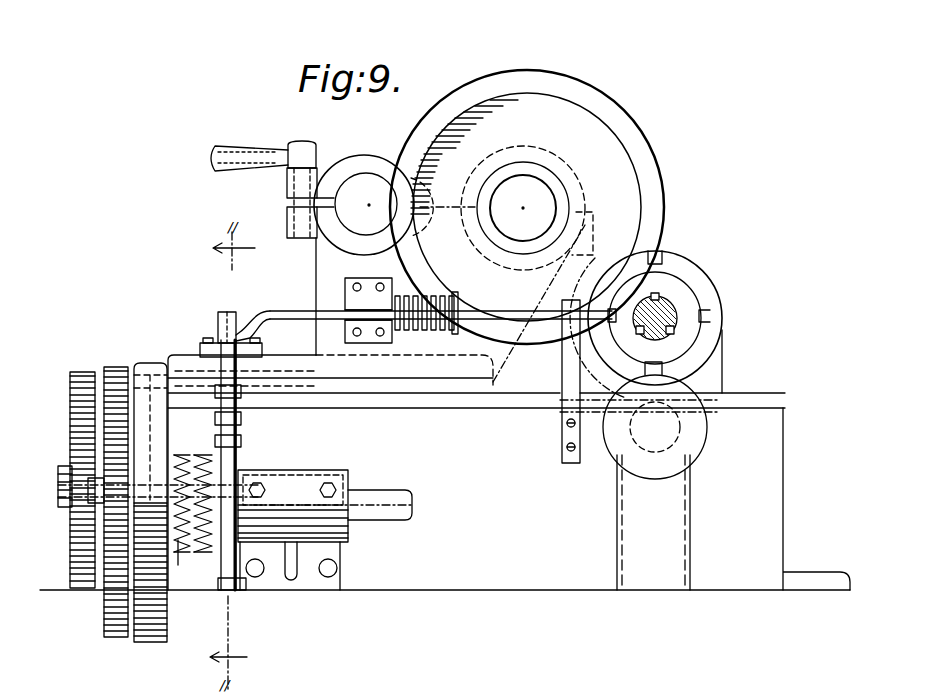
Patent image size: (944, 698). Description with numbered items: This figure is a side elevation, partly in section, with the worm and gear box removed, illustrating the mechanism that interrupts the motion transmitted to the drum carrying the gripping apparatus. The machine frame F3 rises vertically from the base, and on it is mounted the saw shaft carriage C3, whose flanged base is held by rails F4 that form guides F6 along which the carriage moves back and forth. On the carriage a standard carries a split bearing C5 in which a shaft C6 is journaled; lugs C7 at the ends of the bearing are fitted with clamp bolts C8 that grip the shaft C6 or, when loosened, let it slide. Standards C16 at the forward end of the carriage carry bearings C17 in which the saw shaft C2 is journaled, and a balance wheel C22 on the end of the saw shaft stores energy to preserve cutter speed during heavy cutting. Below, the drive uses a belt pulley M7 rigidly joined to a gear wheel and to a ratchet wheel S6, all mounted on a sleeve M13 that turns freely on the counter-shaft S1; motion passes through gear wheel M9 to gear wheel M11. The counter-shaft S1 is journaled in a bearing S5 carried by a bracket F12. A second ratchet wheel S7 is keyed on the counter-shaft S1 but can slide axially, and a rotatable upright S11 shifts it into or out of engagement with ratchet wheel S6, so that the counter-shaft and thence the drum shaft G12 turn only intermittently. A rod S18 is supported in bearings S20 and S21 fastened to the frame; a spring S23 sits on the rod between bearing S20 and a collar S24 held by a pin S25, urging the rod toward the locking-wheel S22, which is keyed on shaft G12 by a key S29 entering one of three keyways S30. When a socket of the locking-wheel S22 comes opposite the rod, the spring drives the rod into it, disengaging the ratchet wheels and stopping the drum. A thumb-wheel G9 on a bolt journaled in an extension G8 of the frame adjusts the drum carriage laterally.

The carriage C3 is at (183, 372).
The machine frame F3 is at (760, 505).
The extension G8 is at (626, 520).
The thumb-wheel G9 is at (672, 462).
The balance wheel C22 is at (628, 130).
The bearing C17 is at (578, 196).
The saw shaft C2 is at (533, 192).
The bearing C5 is at (352, 165).
The shaft C6 is at (378, 178).
The lugs C7 is at (290, 218).
The clamp bolts C8 is at (300, 152).
The rod S18 is at (275, 303).
The guides F6 is at (195, 392).
The bearing S20 is at (352, 282).
The spring S23 is at (420, 285).
The collar S24 is at (443, 300).
The pin S25 is at (462, 297).
The standards C16 is at (507, 362).
The bearing S21 is at (572, 305).
The locking-wheel S22 is at (662, 296).
The shaft G12 is at (670, 310).
The key S29 is at (660, 296).
The keyways S30 is at (670, 334).
The gear wheel M11 is at (75, 592).
The gear wheel M9 is at (107, 638).
The pulley M7 is at (143, 642).
The rails F4 is at (176, 382).
The sleeve M13 is at (105, 520).
The ratchet wheel S6 is at (176, 458).
The ratchet wheel S7 is at (208, 458).
The rotatable upright S11 is at (243, 455).
The bearing S5 is at (350, 525).
The counter-shaft S1 is at (380, 495).
The bracket F12 is at (330, 558).